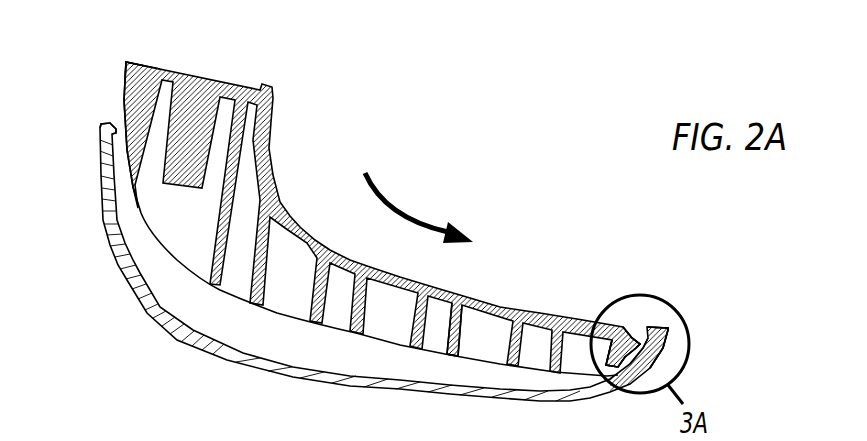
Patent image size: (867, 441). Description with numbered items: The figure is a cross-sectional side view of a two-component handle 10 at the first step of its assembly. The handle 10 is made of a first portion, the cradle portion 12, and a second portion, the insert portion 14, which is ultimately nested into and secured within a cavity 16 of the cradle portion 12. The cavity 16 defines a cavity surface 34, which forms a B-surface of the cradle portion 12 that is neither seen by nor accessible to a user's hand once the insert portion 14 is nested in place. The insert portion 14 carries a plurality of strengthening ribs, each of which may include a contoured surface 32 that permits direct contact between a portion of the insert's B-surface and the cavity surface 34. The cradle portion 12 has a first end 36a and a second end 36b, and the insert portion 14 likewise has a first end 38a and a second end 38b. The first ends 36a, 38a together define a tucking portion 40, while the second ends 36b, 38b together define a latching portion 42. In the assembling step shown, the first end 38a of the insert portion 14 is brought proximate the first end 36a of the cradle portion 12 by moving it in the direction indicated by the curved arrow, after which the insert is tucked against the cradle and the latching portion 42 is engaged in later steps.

The handle 10 is at (453, 116).
The cradle portion 12 is at (137, 321).
The insert portion 14 is at (281, 153).
The cavity 16 is at (316, 356).
The rib surface 32 is at (450, 362).
The cavity surface 34 is at (371, 366).
The first end of cradle portion 36a is at (667, 313).
The second end of cradle portion 36b is at (98, 117).
The first end of insert portion 38a is at (617, 313).
The second end of insert portion 38b is at (118, 61).
The tucking portion 40 is at (673, 283).
The latching portion 42 is at (128, 42).